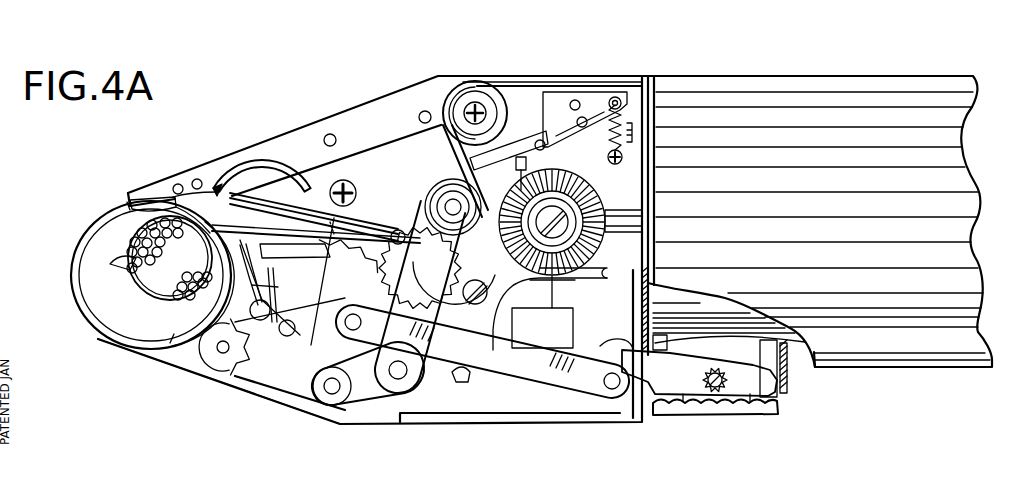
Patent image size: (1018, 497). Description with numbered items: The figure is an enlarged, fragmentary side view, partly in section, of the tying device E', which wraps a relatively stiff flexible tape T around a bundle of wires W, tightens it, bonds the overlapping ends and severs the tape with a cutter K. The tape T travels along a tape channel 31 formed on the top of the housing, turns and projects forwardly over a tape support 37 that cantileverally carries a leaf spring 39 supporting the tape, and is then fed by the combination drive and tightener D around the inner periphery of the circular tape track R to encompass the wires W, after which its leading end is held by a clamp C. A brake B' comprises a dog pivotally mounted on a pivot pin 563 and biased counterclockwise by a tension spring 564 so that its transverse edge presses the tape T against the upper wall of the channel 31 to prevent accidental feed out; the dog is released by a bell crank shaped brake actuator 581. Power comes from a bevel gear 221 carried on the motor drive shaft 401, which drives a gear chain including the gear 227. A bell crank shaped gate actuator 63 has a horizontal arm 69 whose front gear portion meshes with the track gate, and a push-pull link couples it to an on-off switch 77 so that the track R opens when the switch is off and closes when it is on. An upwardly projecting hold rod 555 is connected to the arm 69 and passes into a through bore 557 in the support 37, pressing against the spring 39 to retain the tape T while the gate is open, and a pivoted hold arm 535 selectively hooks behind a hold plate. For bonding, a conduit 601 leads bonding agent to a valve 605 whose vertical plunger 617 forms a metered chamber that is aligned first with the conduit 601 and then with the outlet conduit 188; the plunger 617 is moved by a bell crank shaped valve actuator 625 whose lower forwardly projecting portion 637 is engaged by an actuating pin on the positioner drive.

The tape channel 31 is at (470, 88).
The tape T is at (505, 76).
The pivot pin 563 is at (577, 100).
The brake B' is at (627, 93).
The tension spring 564 is at (620, 118).
The tying device E' is at (820, 221).
The cutter K is at (254, 160).
The leaf spring 39 is at (220, 200).
The through bore 557 is at (362, 194).
The brake actuator 581 is at (478, 150).
The gear 227 is at (567, 177).
The bevel gear 221 is at (597, 200).
The motor drive shaft 401 is at (625, 212).
The wires W is at (150, 259).
The clamp C is at (204, 246).
The flexible conduit 188 is at (275, 292).
The tape support 37 is at (316, 281).
The combination drive and tightener D is at (432, 291).
The tape track R is at (95, 338).
The hold rod 555 is at (244, 347).
The hold arm 535 is at (333, 377).
The horizontal arm 69 is at (278, 385).
The gate actuator 63 is at (368, 378).
The forwardly projecting portion 637 is at (462, 374).
The bonding agent valve 605 is at (507, 395).
The vertical plunger 617 is at (550, 296).
The valve actuator 625 is at (562, 282).
The bonding agent conduit 601 is at (600, 348).
The on-off switch 77 is at (678, 410).